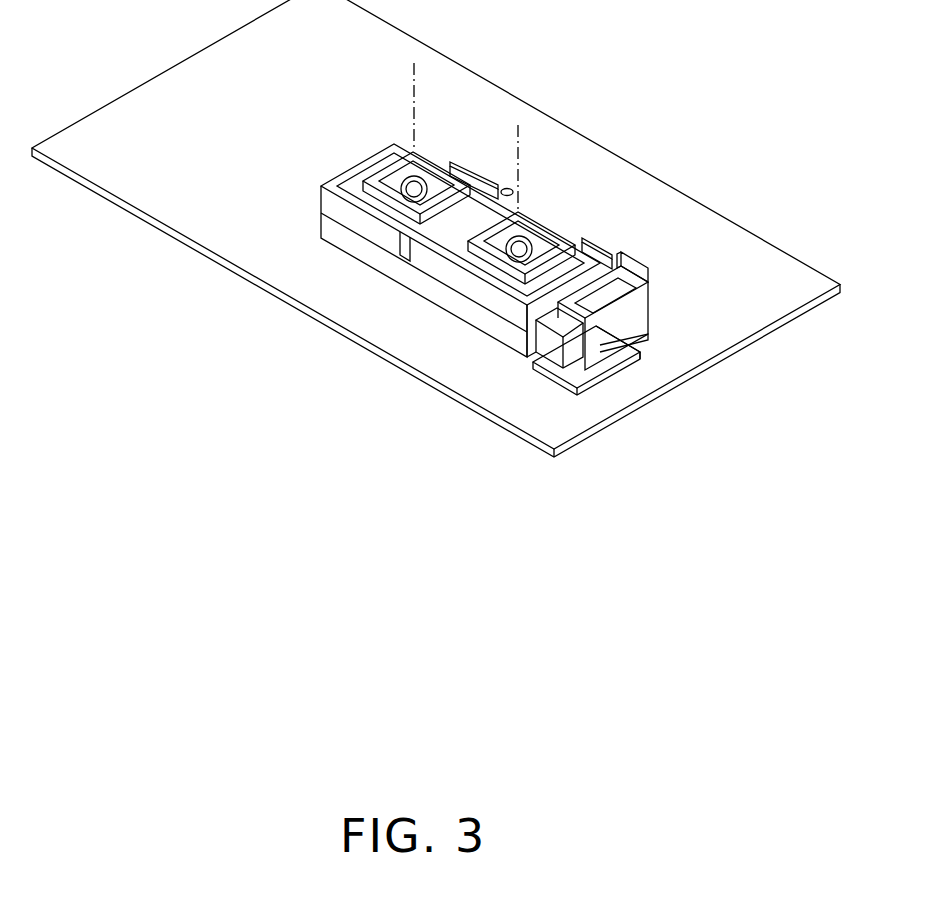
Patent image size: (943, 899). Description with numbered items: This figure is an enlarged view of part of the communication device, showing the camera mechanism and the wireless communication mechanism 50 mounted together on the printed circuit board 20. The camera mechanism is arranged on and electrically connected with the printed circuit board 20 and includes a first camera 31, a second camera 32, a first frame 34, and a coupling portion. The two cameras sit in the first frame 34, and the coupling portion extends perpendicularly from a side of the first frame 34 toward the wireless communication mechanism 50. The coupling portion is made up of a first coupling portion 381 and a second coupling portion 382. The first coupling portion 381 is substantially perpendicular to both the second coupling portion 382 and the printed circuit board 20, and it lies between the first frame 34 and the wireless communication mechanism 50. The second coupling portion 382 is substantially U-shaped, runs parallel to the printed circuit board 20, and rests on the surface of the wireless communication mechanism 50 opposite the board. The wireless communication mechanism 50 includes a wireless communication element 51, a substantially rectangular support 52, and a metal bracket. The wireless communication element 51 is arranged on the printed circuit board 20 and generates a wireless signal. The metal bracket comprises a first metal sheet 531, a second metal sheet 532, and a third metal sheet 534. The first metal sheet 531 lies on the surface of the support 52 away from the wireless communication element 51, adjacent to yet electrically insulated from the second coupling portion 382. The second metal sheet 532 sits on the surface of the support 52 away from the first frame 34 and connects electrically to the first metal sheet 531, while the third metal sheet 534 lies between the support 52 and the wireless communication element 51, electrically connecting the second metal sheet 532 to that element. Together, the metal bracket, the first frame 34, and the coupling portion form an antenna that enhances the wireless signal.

The printed circuit board 20 is at (255, 62).
The first camera 31 is at (540, 210).
The second camera 32 is at (432, 158).
The first frame 34 is at (433, 287).
The first coupling portion 381 is at (530, 333).
The second coupling portion 382 is at (628, 267).
The wireless communication mechanism 50 is at (545, 384).
The wireless communication element 51 is at (597, 343).
The support 52 is at (653, 307).
The first metal sheet 531 is at (625, 290).
The second metal sheet 532 is at (620, 345).
The third metal sheet 534 is at (640, 353).